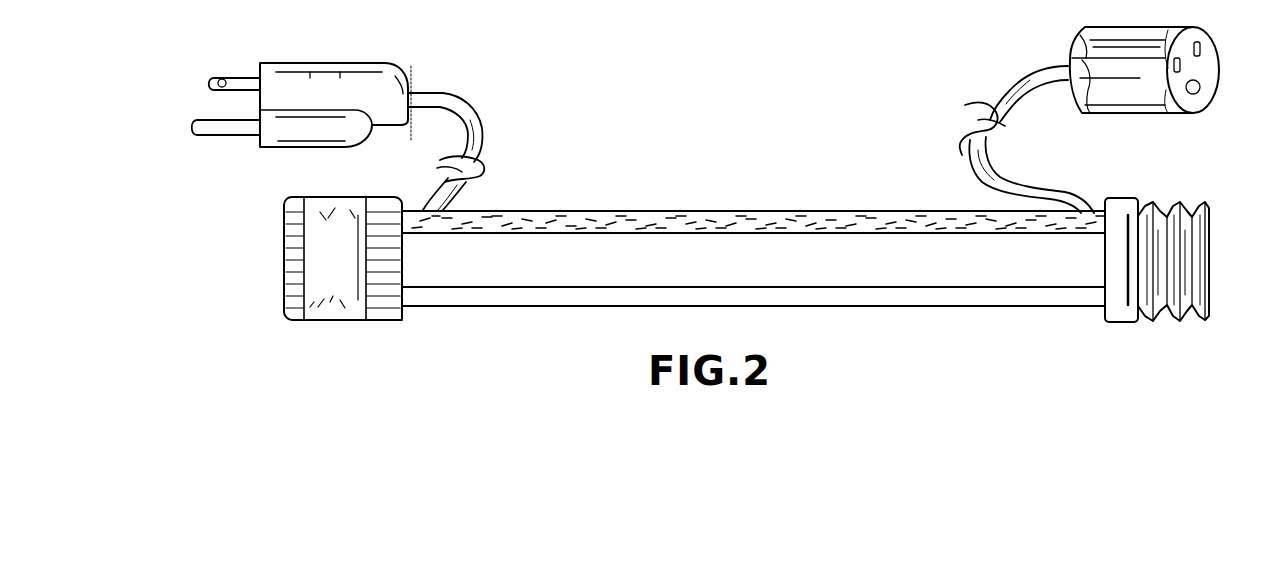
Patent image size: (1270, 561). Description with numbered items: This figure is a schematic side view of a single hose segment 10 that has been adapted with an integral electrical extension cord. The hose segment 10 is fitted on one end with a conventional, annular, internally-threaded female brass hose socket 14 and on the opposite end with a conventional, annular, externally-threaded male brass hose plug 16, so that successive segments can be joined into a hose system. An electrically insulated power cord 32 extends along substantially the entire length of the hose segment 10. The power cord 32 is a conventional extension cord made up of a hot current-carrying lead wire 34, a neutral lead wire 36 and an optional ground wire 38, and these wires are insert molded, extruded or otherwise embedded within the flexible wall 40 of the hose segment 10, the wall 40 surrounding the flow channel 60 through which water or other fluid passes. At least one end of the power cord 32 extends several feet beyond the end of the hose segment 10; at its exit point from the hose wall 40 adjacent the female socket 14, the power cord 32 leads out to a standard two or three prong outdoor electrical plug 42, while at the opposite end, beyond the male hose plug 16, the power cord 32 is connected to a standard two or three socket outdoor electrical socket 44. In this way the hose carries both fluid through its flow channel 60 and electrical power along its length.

The hose segment 10 is at (557, 302).
The female hose socket 14 is at (323, 320).
The male hose plug 16 is at (1140, 312).
The power cord 32 is at (476, 184).
The hot lead wire 34 is at (584, 210).
The neutral lead wire 36 is at (712, 230).
The ground wire 38 is at (428, 214).
The flexible wall 40 is at (926, 302).
The electrical plug 42 is at (393, 66).
The electrical socket 44 is at (1088, 36).
The flow channel 60 is at (866, 281).